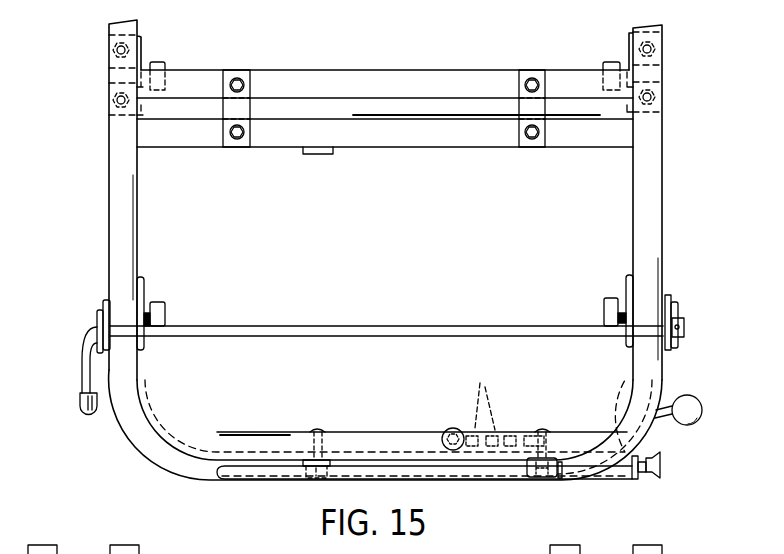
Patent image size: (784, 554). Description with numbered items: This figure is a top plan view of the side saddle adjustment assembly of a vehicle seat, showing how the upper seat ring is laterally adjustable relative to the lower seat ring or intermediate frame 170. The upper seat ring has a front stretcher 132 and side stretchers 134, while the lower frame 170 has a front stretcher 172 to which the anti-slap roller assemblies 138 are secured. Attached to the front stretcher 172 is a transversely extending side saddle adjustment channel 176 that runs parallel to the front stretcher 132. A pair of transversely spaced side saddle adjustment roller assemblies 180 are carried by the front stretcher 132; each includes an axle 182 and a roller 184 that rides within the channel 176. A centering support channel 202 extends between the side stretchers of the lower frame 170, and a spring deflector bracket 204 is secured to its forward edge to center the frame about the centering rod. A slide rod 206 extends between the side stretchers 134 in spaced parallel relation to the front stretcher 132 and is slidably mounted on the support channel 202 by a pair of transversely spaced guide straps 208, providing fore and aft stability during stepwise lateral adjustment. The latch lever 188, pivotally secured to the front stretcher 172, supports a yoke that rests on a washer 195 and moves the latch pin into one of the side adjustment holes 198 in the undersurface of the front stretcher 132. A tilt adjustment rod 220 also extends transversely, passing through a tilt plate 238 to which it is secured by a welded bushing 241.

The front stretcher 132 is at (355, 443).
The side stretcher 134 is at (117, 215).
The anti-slap roller assembly 138 is at (160, 50).
The lower seat ring 170 is at (342, 444).
The front stretcher 172 is at (175, 470).
The side saddle adjustment channel 176 is at (460, 480).
The side saddle adjustment roller assembly 180 is at (318, 418).
The axle 182 is at (325, 440).
The roller 184 is at (306, 476).
The latch lever 188 is at (667, 420).
The washer 195 is at (455, 428).
The side adjustment hole 198 is at (480, 384).
The centering support channel 202 is at (445, 132).
The spring deflector bracket 204 is at (318, 155).
The slide rod 206 is at (337, 107).
The guide strap 208 is at (250, 85).
The tilt adjustment rod 220 is at (400, 325).
The tilt plate 238 is at (672, 298).
The bushing 241 is at (686, 327).